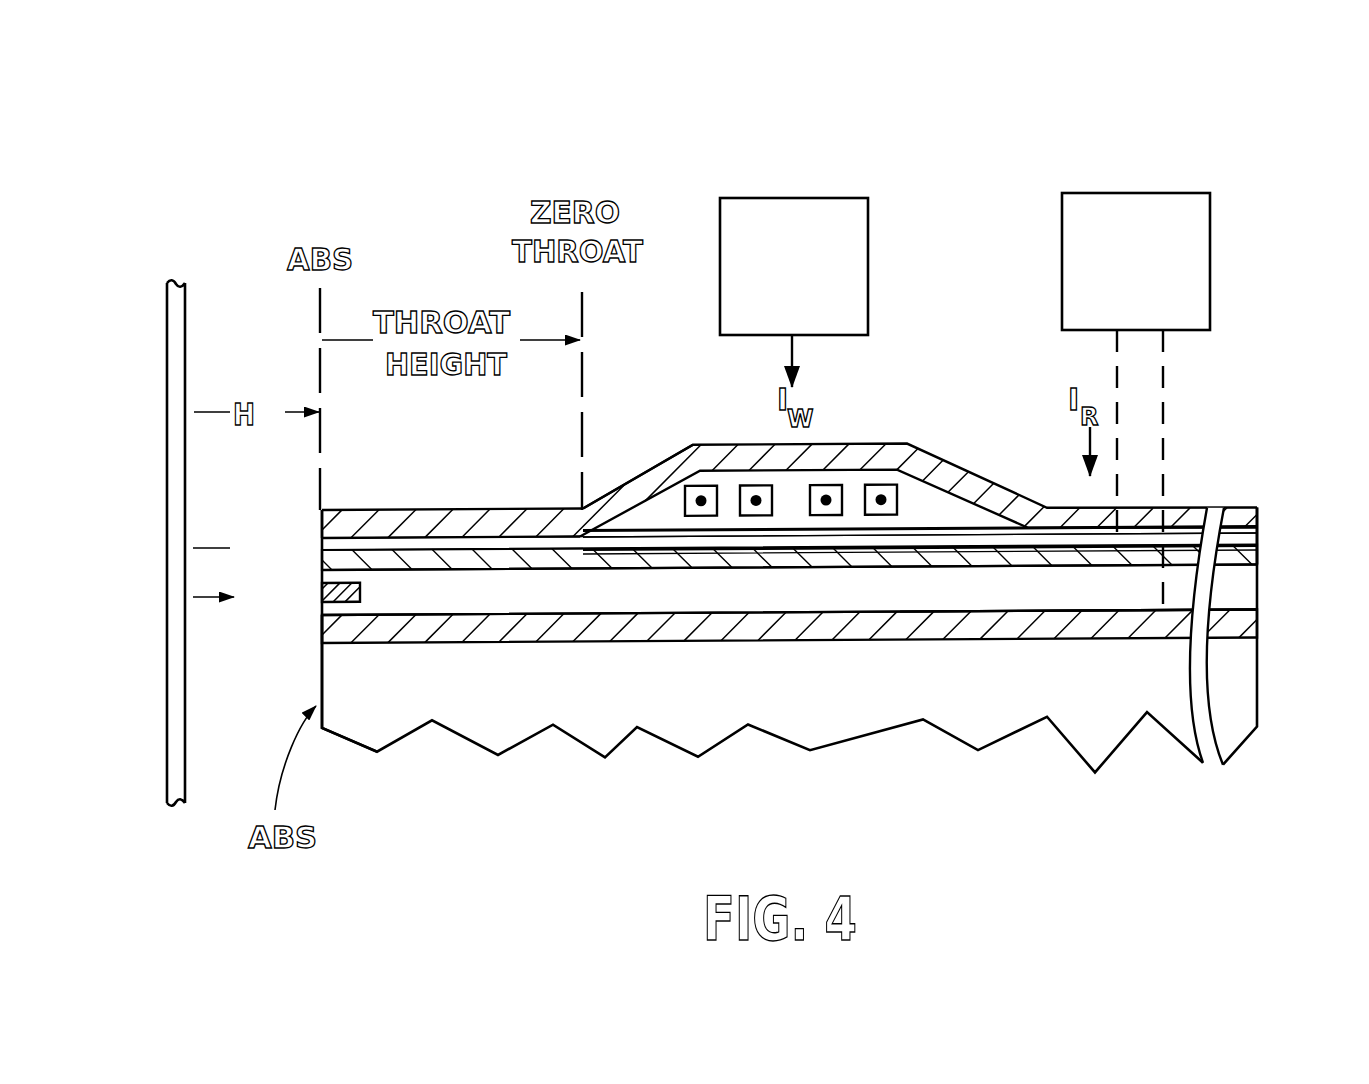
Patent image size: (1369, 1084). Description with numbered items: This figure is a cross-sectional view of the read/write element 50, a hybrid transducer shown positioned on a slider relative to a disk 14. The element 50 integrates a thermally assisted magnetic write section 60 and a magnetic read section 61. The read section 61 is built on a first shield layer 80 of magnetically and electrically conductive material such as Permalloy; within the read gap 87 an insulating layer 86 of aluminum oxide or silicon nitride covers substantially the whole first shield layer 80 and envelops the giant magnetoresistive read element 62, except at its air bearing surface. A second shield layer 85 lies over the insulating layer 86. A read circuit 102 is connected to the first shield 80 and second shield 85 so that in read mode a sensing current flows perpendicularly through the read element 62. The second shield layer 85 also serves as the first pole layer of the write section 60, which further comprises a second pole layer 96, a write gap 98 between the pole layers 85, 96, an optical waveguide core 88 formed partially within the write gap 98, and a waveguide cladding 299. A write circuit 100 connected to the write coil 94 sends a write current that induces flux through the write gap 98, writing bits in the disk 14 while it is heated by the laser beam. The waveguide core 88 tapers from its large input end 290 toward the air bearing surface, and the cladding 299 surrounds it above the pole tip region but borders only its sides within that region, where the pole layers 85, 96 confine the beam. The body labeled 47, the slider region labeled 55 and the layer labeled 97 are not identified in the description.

The disk 14 is at (172, 785).
The substrate 47 is at (695, 691).
The read/write element 50 is at (512, 295).
The slider body 55 is at (372, 728).
The write section 60 is at (636, 479).
The magnetic read section 61 is at (306, 632).
The read element 62 is at (320, 590).
The first shield layer 80 is at (427, 643).
The second shield layer 85 is at (800, 557).
The insulating layer 86 is at (1072, 600).
The read gap 87 is at (426, 609).
The optical waveguide core 88 is at (600, 542).
The write coil 94 is at (883, 485).
The second pole layer 96 is at (427, 517).
The gap layer 97 is at (462, 540).
The write gap 98 is at (318, 545).
The write circuit 100 is at (777, 205).
The read circuit 102 is at (1065, 235).
The input end 290 is at (1258, 538).
The optical waveguide cladding 299 is at (927, 527).